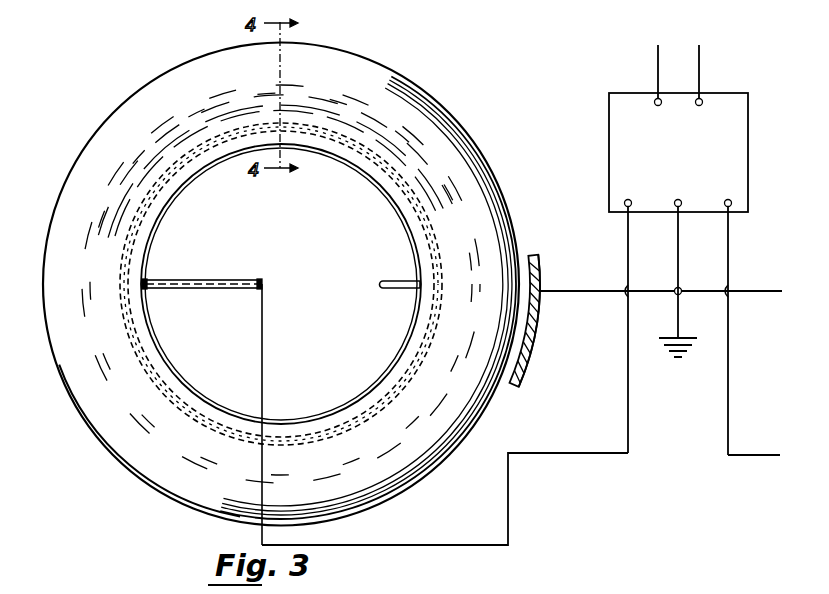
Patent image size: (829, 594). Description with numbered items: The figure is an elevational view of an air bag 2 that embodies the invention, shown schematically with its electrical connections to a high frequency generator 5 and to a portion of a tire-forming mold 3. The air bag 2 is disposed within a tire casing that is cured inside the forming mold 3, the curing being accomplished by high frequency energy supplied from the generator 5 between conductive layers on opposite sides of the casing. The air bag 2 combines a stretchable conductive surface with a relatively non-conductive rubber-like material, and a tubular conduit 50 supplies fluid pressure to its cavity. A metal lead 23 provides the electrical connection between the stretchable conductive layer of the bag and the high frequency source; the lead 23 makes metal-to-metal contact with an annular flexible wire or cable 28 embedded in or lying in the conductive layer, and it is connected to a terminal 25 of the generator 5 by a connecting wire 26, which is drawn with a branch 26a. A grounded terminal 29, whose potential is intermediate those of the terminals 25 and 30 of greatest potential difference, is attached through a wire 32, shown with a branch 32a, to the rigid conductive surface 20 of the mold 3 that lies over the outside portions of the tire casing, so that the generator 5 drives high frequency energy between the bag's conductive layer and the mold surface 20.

The air bag 2 is at (452, 118).
The annular flexible wire or cable 28 is at (190, 152).
The metal lead 23 is at (262, 282).
The tubular conduit 50 is at (390, 280).
The mold surface 20 is at (532, 255).
The forming mold 3 is at (540, 338).
The high frequency generator 5 is at (609, 120).
The terminal 25 is at (629, 199).
The grounded terminal 29 is at (678, 199).
The terminal 30 is at (727, 199).
The wire 32 is at (640, 292).
The lead wire branch 32a is at (765, 289).
The connecting wire 26 is at (562, 452).
The conductor branch 26a is at (730, 408).